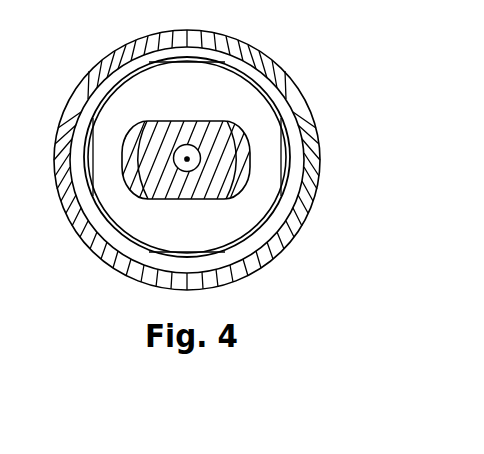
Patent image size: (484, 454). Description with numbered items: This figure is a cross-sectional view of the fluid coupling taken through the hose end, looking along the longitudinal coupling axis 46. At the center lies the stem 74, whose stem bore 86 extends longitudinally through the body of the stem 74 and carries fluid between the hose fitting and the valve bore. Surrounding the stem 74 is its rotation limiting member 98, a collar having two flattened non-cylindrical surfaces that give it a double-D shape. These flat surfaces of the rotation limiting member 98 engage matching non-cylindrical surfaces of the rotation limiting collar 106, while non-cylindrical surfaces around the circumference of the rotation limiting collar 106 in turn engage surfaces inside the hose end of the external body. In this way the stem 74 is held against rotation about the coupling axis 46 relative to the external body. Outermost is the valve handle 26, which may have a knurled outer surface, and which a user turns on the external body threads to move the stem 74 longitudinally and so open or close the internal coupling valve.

The valve handle 26 is at (300, 206).
The rotation limiting collar 106 is at (208, 92).
The rotation limiting member 98 is at (207, 142).
The stem 74 is at (217, 168).
The coupling axis 46 is at (182, 146).
The stem bore 86 is at (186, 158).